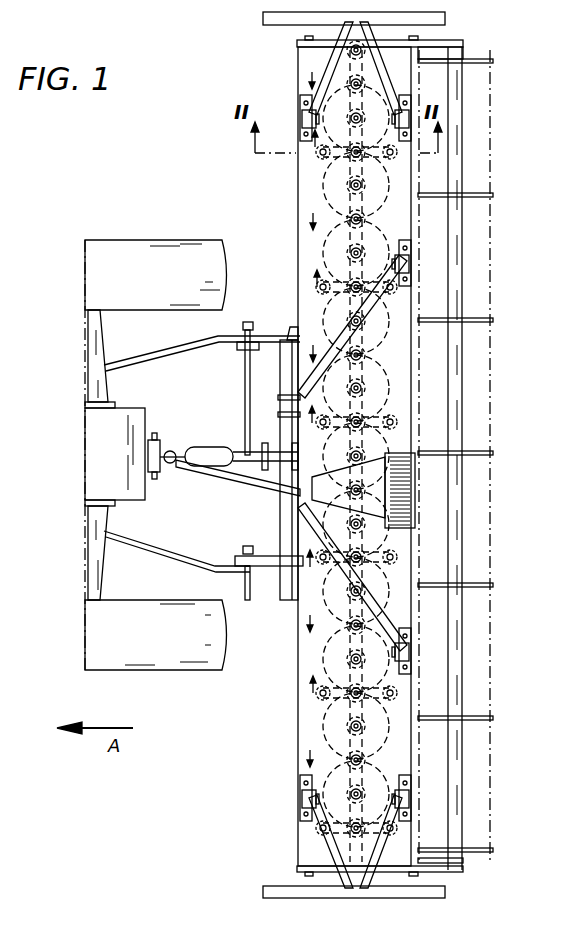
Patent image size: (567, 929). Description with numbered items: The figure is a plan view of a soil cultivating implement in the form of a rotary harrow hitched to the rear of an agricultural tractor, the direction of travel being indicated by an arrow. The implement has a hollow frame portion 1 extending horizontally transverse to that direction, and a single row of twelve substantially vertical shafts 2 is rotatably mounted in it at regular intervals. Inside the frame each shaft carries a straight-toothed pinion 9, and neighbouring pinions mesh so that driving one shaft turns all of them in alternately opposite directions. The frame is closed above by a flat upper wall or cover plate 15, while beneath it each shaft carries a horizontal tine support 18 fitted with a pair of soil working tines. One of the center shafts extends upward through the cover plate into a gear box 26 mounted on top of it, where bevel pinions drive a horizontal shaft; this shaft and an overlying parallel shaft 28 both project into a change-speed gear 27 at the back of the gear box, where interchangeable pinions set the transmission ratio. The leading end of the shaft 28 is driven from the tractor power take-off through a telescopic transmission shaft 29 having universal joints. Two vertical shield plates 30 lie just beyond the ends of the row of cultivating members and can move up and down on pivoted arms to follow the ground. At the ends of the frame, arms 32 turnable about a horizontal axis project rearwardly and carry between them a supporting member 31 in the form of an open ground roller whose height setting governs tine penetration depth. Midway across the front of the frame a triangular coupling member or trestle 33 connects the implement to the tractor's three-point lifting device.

The hollow frame portion 1 is at (296, 185).
The shafts 2 is at (388, 180).
The pinion 9 is at (379, 312).
The upper wall or cover plate 15 is at (312, 247).
The tine support 18 is at (332, 741).
The gear box 26 is at (380, 415).
The change-speed gear 27 is at (412, 490).
The shaft 28 is at (275, 497).
The telescopic transmission shaft 29 is at (222, 480).
The shield plates 30 is at (263, 17).
The supporting member 31 is at (493, 232).
The arms 32 is at (463, 40).
The coupling member or trestle 33 is at (290, 578).